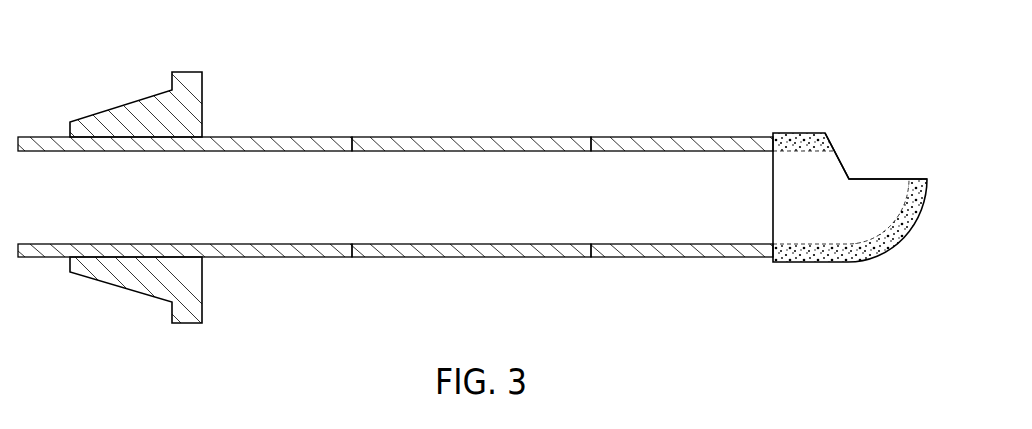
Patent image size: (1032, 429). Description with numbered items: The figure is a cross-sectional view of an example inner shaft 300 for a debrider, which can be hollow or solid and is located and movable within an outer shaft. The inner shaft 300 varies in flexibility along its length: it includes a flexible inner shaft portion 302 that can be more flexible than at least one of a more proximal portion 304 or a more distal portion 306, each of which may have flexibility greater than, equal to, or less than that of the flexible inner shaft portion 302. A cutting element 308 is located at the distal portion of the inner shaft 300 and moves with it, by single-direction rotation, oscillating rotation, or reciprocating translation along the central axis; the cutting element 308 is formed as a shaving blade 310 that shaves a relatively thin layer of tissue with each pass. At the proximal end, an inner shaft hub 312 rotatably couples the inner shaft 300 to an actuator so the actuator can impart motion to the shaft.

The inner shaft 300 is at (852, 54).
The flexible inner shaft portion 302 is at (471, 137).
The more proximal portion 304 is at (277, 136).
The more distal portion 306 is at (683, 137).
The cutting element 308 is at (845, 263).
The shaving blade 310 is at (867, 160).
The inner shaft hub 312 is at (122, 108).